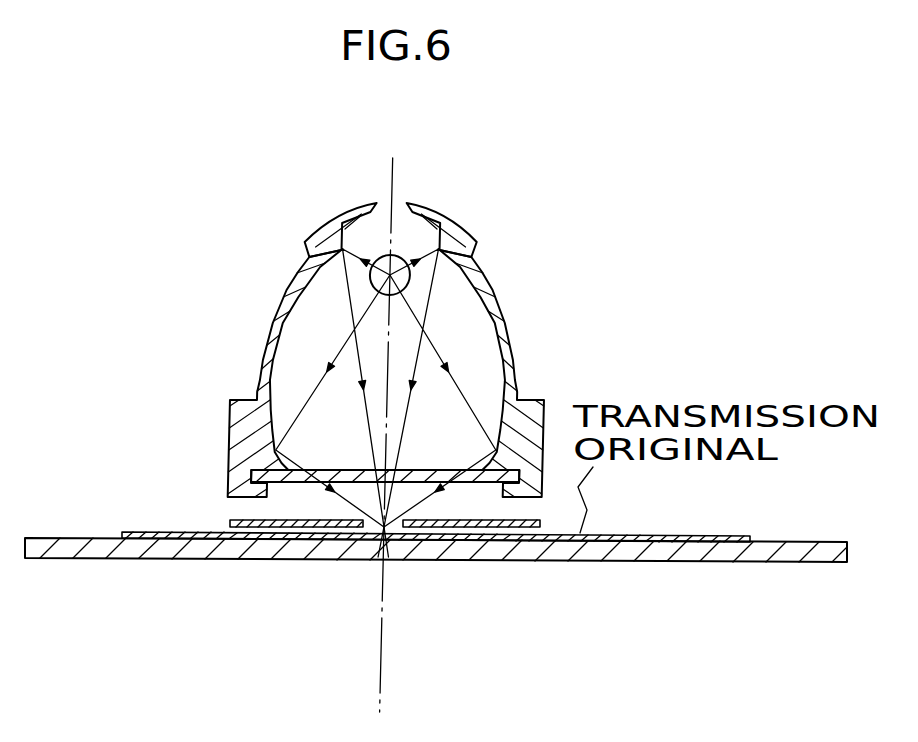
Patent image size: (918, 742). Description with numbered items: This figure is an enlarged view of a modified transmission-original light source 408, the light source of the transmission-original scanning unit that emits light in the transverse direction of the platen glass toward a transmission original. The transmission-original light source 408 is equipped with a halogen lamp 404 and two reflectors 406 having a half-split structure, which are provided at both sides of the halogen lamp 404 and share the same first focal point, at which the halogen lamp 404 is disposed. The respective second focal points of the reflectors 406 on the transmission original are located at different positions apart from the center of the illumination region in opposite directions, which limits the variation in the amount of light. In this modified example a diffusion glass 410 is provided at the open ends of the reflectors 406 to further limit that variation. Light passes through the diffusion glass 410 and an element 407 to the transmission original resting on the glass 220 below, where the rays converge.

The original platen glass 220 is at (787, 542).
The halogen lamp 404 is at (403, 262).
The reflector 406 is at (467, 233).
The lens 407 is at (240, 520).
The transmission-original light source 408 is at (552, 277).
The diffusion glass 410 is at (423, 469).